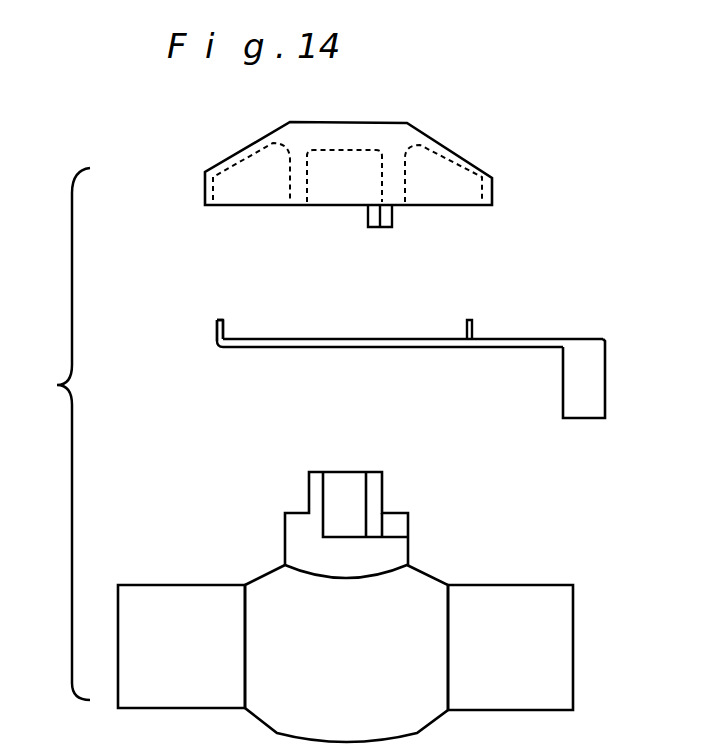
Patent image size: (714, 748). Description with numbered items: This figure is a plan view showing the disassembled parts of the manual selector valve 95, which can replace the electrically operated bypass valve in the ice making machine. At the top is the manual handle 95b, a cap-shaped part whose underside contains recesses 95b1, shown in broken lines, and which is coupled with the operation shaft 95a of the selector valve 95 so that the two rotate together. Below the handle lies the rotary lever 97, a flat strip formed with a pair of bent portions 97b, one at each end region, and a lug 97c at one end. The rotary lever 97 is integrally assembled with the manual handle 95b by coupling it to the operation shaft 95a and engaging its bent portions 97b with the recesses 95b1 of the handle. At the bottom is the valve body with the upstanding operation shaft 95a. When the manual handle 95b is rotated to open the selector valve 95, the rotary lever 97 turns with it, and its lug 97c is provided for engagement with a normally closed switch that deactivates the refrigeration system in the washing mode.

The selector valve 95 is at (57, 434).
The operation shaft 95a is at (313, 497).
The manual handle 95b is at (418, 135).
The recesses 95b1 is at (460, 223).
The rotary lever 97 is at (337, 347).
The bent portions 97b is at (215, 322).
The lug 97c is at (603, 390).